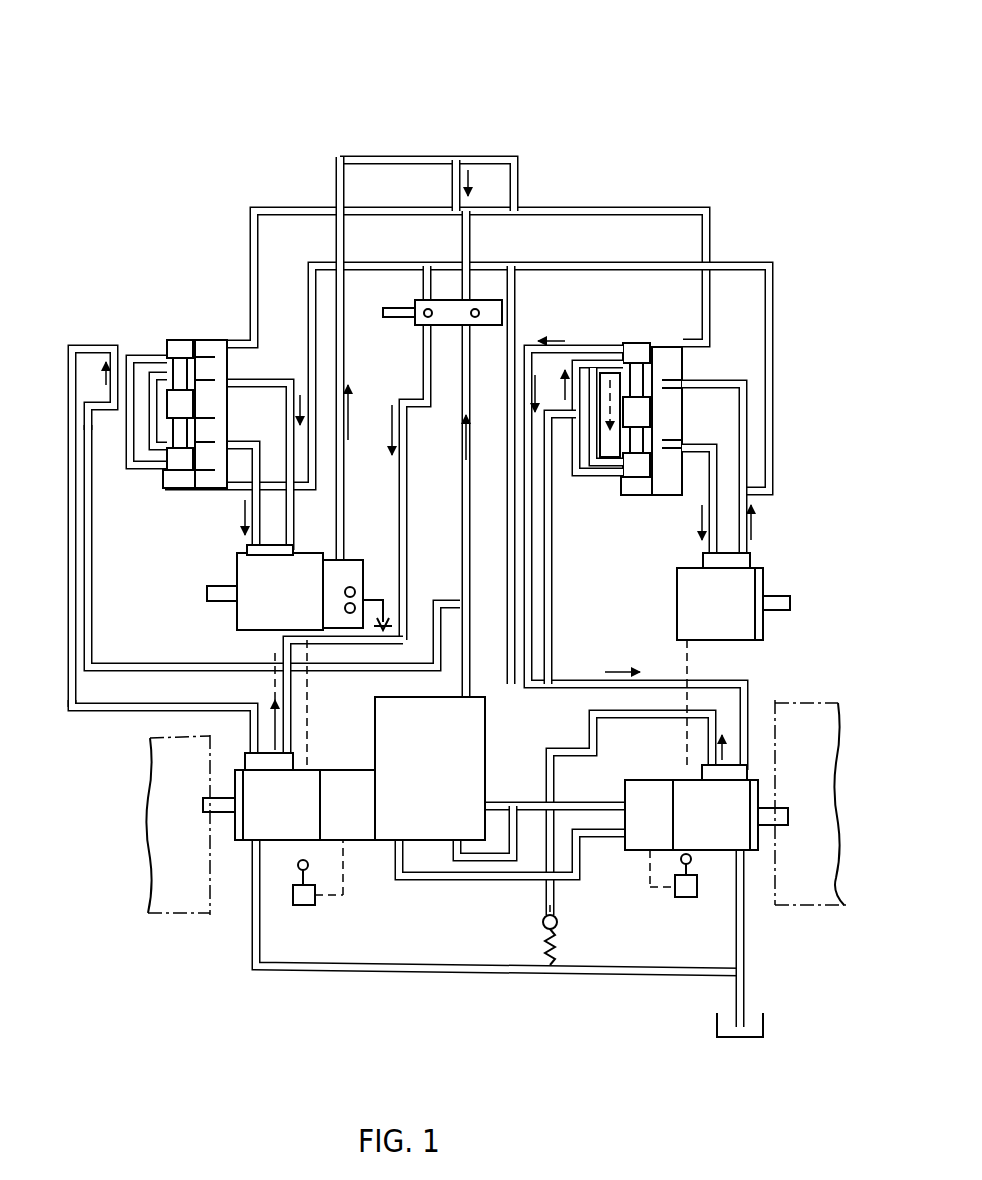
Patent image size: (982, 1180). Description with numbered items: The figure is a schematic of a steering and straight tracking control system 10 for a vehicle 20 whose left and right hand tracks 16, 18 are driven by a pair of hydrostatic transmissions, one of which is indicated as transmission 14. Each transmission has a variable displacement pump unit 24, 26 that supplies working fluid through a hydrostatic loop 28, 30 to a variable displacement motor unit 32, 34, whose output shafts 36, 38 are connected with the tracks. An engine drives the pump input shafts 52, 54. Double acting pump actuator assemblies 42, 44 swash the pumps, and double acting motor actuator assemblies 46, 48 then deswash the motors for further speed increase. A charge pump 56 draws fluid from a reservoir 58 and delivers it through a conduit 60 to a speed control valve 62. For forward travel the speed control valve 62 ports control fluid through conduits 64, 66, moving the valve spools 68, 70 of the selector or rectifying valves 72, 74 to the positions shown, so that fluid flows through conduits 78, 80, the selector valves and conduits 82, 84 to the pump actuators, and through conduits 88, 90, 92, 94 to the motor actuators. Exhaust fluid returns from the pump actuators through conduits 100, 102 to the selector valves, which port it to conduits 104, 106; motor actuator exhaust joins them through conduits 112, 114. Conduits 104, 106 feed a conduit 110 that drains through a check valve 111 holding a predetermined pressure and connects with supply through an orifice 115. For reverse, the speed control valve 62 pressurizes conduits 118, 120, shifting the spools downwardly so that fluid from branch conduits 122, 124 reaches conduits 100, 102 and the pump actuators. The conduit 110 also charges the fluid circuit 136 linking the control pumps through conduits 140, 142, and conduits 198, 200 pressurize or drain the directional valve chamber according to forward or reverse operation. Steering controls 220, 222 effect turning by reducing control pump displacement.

The steering and/or straight tracking control system 10 is at (490, 794).
The hydrostatic transmission 14 is at (848, 570).
The left hand track 16 is at (150, 820).
The right hand track 18 is at (842, 808).
The vehicle 20 is at (742, 87).
The variable displacement pump unit 24 is at (237, 570).
The variable displacement pump unit 26 is at (730, 577).
The hydrostatic loop 28 is at (310, 712).
The hydrostatic loop 30 is at (687, 664).
The variable displacement motor unit 32 is at (267, 797).
The variable displacement motor unit 34 is at (723, 800).
The output shaft 36 is at (204, 800).
The output shaft 38 is at (777, 810).
The pump controller or actuator assembly 42 is at (284, 550).
The pump controller or actuator assembly 44 is at (753, 554).
The motor controller or actuator assembly 46 is at (297, 766).
The motor controller or actuator assembly 48 is at (702, 770).
The input shaft 52 is at (206, 596).
The input shaft 54 is at (792, 602).
The charge pump 56 is at (357, 597).
The reservoir 58 is at (378, 633).
The conduit 60 is at (346, 362).
The speed control valve 62 is at (380, 313).
The conduit 64 is at (312, 266).
The conduit 66 is at (638, 266).
The valve spool 68 is at (166, 338).
The valve spool 70 is at (625, 342).
The selector or rectifying valve 72 is at (185, 369).
The selector or rectifying valve 74 is at (648, 387).
The conduit 78 is at (224, 432).
The conduit 80 is at (684, 434).
The conduit 82 is at (252, 503).
The conduit 84 is at (706, 519).
The conduit 88 is at (118, 478).
The conduit 90 is at (64, 394).
The conduit 92 is at (553, 484).
The conduit 94 is at (586, 678).
The conduit 100 is at (252, 372).
The conduit 102 is at (704, 384).
The conduit 104 is at (95, 560).
The conduit 106 is at (545, 598).
The conduit 110 is at (603, 814).
The check valve 111 is at (557, 926).
The conduit 112 is at (280, 647).
The conduit 114 is at (632, 727).
The orifice 115 is at (490, 155).
The conduit 118 is at (302, 206).
The conduit 120 is at (634, 214).
The branch conduit 122 is at (242, 352).
The branch conduit 124 is at (706, 356).
The fluid circuit 136 is at (444, 882).
The conduit 140 is at (399, 873).
The conduit 142 is at (486, 864).
The conduit 198 is at (426, 386).
The conduit 200 is at (462, 540).
The steering control 220 is at (689, 897).
The steering control 222 is at (302, 905).